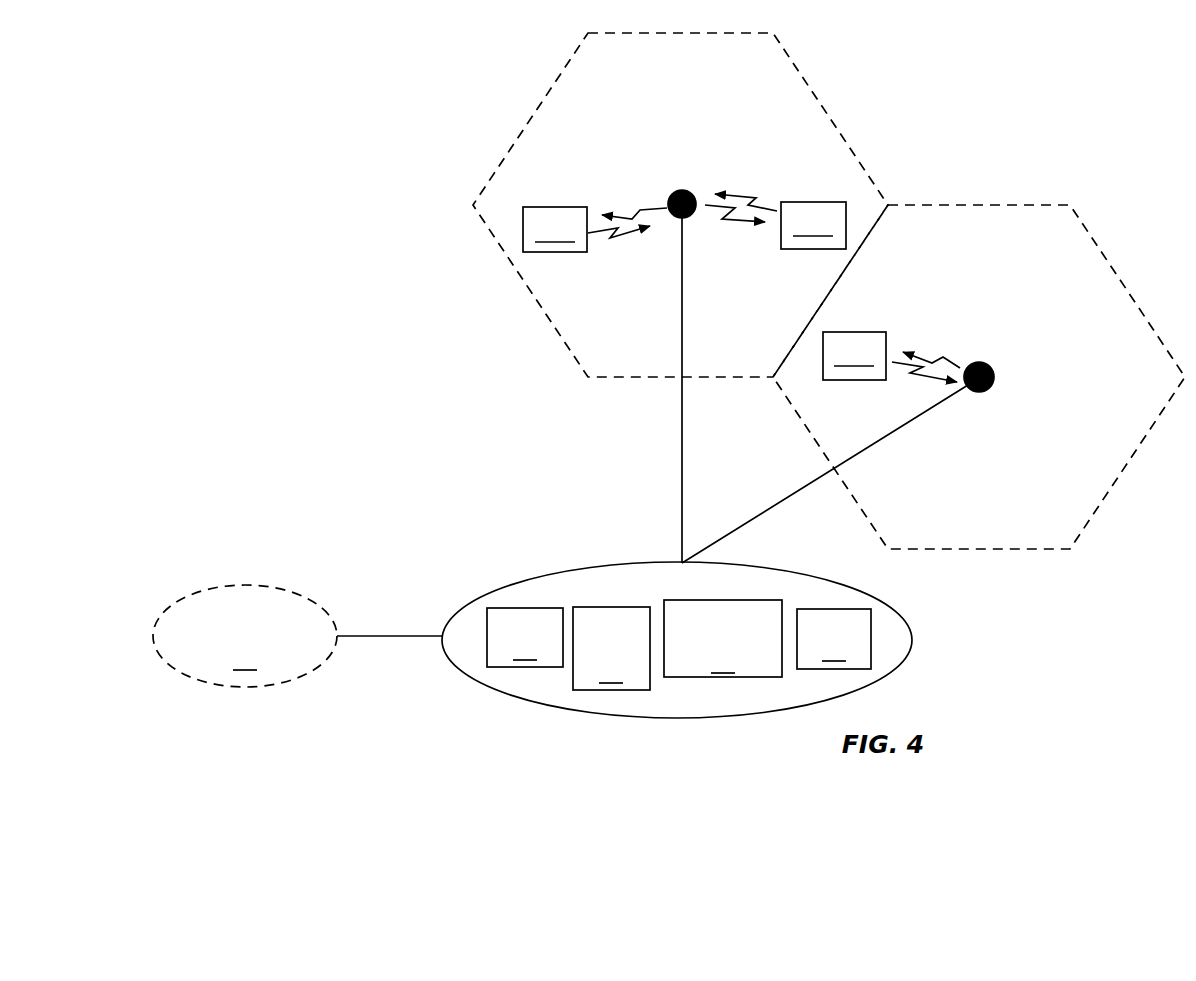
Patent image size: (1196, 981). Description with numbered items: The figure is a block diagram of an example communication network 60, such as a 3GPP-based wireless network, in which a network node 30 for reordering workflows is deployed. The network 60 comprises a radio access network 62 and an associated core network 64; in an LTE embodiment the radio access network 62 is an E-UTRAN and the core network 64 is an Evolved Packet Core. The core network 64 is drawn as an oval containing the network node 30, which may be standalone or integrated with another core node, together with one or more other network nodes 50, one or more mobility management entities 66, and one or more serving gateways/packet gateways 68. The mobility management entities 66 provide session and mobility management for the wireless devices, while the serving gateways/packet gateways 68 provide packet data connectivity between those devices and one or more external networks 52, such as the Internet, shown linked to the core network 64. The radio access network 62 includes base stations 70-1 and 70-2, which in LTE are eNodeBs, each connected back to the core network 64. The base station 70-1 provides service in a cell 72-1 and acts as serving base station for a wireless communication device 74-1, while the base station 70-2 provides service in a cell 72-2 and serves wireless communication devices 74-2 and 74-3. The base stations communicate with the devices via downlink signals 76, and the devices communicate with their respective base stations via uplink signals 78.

The communication network 60 is at (1046, 122).
The radio access network 62 is at (656, 419).
The core network 64 is at (582, 568).
The external network 52 is at (297, 636).
The mobility management entity 66 is at (525, 637).
The serving gateway/packet gateway 68 is at (611, 648).
The other network node 50 is at (723, 638).
The network node 30 is at (834, 639).
The base station 70-1 is at (991, 364).
The base station 70-2 is at (675, 193).
The cell 72-1 is at (1118, 277).
The cell 72-2 is at (826, 112).
The wireless communication device 74-1 is at (854, 356).
The wireless communication device 74-2 is at (813, 225).
The wireless communication device 74-3 is at (555, 229).
The downlink signal 76 is at (634, 210).
The uplink signal 78 is at (620, 232).